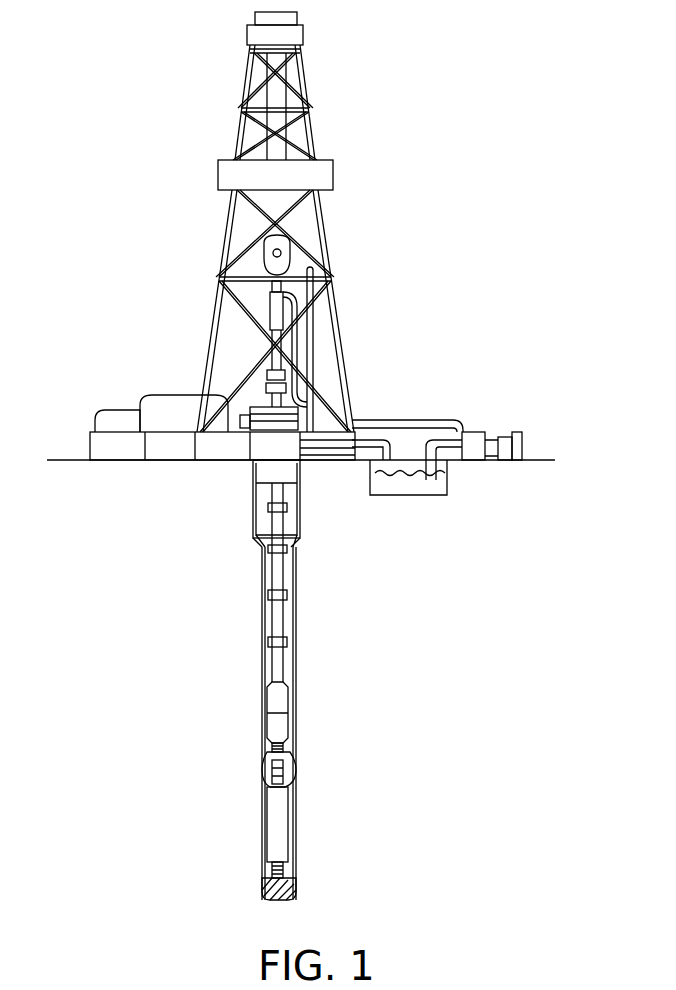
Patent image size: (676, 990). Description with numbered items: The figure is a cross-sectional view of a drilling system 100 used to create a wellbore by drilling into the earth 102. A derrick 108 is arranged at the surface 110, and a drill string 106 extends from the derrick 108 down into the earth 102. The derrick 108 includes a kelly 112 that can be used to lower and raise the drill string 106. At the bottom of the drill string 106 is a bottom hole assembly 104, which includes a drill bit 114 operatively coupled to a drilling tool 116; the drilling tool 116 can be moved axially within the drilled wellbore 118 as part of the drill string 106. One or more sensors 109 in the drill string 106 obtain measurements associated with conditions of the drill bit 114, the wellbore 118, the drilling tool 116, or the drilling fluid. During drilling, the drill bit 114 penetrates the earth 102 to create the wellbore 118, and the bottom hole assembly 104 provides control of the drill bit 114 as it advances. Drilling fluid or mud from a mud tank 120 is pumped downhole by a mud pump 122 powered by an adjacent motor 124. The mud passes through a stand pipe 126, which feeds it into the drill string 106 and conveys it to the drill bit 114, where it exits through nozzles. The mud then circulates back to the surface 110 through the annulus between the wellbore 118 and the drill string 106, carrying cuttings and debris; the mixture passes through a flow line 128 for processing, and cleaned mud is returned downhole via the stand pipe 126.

The drilling system 100 is at (522, 228).
The earth 102 is at (80, 560).
The bottom hole assembly 104 is at (213, 716).
The drill string 106 is at (278, 620).
The derrick 108 is at (228, 238).
The sensors 109 is at (283, 770).
The surface 110 is at (55, 460).
The kelly 112 is at (283, 252).
The drill bit 114 is at (297, 888).
The drilling tool 116 is at (278, 832).
The wellbore 118 is at (262, 578).
The mud tank 120 is at (412, 487).
The mud pump 122 is at (478, 432).
The motor 124 is at (505, 445).
The stand pipe 126 is at (313, 345).
The flow line 128 is at (385, 425).